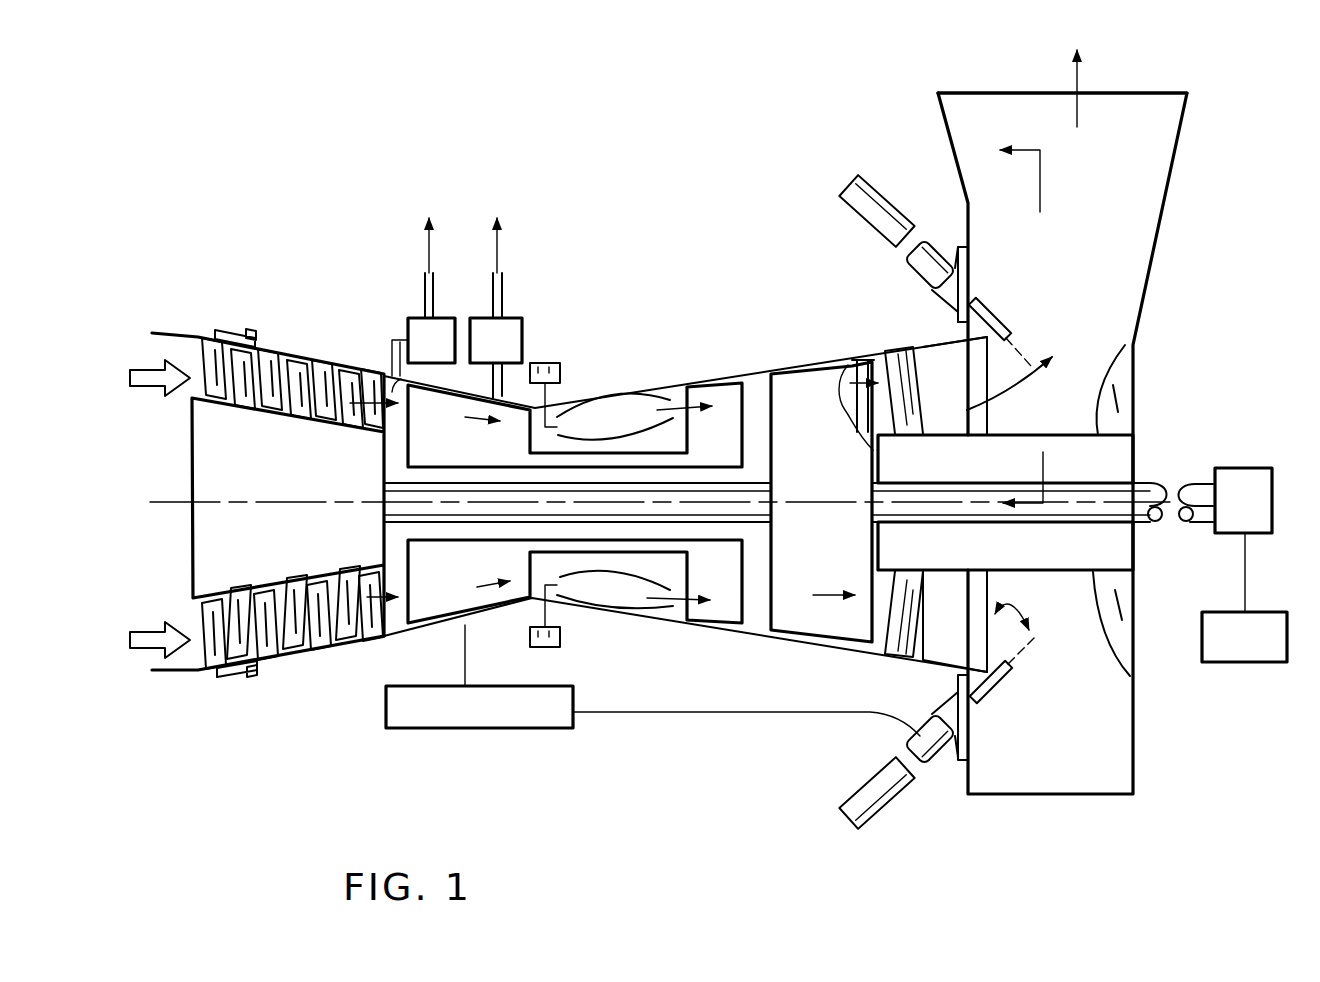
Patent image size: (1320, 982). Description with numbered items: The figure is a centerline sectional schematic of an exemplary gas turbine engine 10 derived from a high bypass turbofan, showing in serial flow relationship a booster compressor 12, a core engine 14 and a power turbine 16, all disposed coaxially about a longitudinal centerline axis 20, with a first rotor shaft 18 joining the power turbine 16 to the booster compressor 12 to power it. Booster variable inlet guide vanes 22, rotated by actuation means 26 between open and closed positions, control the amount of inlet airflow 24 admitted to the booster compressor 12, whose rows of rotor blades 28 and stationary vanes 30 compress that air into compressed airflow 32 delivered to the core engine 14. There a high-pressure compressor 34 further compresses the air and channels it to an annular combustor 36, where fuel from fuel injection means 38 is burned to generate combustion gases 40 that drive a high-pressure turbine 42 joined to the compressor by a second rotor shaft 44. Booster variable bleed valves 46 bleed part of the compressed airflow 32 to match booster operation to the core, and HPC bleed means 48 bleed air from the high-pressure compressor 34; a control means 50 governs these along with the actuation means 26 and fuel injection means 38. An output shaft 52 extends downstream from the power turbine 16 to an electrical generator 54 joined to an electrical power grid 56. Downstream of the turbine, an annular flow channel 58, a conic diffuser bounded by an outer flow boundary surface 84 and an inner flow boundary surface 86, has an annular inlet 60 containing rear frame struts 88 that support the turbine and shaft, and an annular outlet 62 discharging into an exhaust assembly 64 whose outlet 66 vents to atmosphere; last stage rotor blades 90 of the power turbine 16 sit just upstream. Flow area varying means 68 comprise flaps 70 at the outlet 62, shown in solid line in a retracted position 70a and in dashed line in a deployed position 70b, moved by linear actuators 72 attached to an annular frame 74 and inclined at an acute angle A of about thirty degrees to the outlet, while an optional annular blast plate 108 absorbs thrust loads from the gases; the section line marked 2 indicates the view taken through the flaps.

The gas turbine engine 10 is at (720, 342).
The booster compressor 12 is at (238, 452).
The core engine 14 is at (661, 632).
The power turbine 16 is at (838, 482).
The first rotor shaft 18 is at (383, 526).
The longitudinal centerline axis 20 is at (237, 504).
The booster variable inlet guide vanes 22 is at (201, 364).
The inlet airflow 24 is at (151, 392).
The actuation means 26 is at (226, 332).
The rotor blades 28 is at (295, 362).
The stationary vanes 30 is at (267, 352).
The compressed airflow 32 is at (374, 374).
The high-pressure compressor 34 is at (452, 460).
The annular combustor 36 is at (607, 410).
The fuel injection means 38 is at (549, 362).
The combustion gases 40 is at (682, 403).
The high-pressure turbine 42 is at (734, 452).
The second rotor shaft 44 is at (557, 535).
The booster variable bleed valves 46 is at (450, 358).
The HPC bleed means 48 is at (516, 358).
The control means 50 is at (496, 724).
The output shaft 52 is at (1093, 476).
The electrical generator 54 is at (1263, 520).
The electrical power grid 56 is at (1265, 650).
The annular flow channel 58 is at (940, 362).
The annular inlet 60 is at (871, 352).
The annular outlet 62 is at (990, 415).
The exhaust assembly 64 is at (1152, 283).
The outlet 66 is at (1168, 92).
The flow area varying means 68 is at (898, 270).
The flaps 70 is at (997, 310).
The retracted position 70a is at (994, 308).
The deployed position 70b is at (1034, 349).
The linear actuators 72 is at (860, 182).
The annular frame 74 is at (963, 224).
The annular outer flow boundary surface 84 is at (937, 665).
The annular inner flow boundary surface 86 is at (950, 572).
The rear frame struts 88 is at (927, 418).
The last stage rotor blades 90 is at (857, 363).
The annular blast plate 108 is at (1121, 347).
The section line 2- 2 is at (1034, 331).
The acute angle A is at (1023, 607).